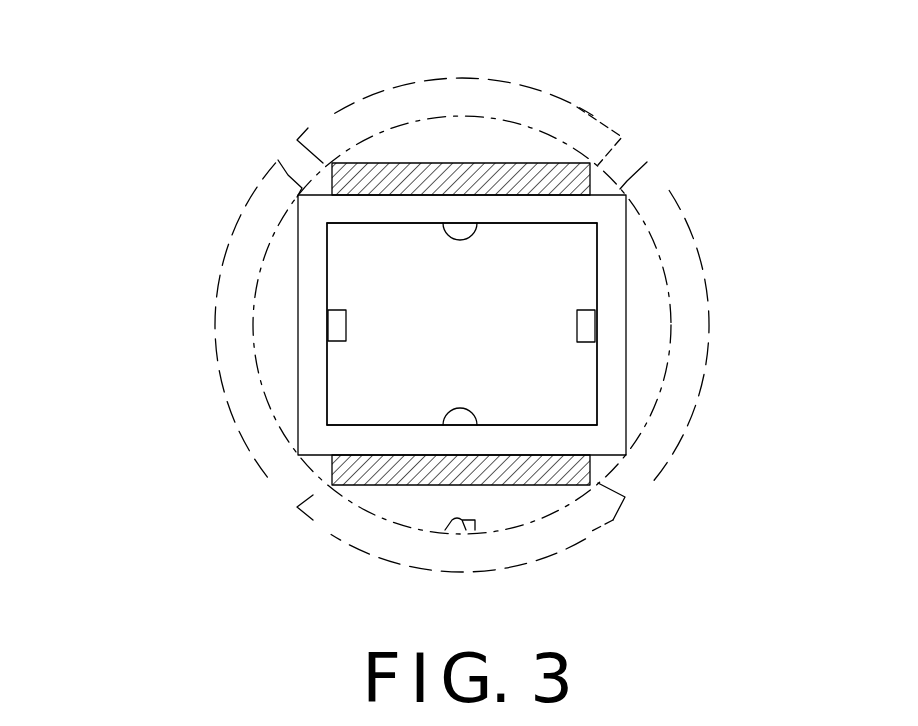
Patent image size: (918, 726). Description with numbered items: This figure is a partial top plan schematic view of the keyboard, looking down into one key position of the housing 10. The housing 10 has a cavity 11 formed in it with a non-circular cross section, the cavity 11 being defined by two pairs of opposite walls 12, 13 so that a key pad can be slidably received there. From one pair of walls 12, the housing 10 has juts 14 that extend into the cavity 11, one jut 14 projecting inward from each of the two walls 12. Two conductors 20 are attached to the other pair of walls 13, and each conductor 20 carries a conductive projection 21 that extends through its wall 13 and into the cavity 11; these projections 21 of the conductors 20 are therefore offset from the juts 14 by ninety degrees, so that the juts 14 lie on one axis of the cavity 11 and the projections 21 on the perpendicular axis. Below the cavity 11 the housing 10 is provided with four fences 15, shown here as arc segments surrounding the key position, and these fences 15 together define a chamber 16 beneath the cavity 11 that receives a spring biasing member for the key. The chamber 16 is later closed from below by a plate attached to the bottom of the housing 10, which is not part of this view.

The housing 10 is at (462, 267).
The cavity 11 is at (590, 271).
The wall 12 is at (312, 382).
The wall 13 is at (572, 213).
The jut 14 is at (330, 317).
The fence 15 is at (443, 95).
The chamber 16 is at (445, 527).
The conductor 20 is at (360, 167).
The conductive projection 21 is at (467, 233).